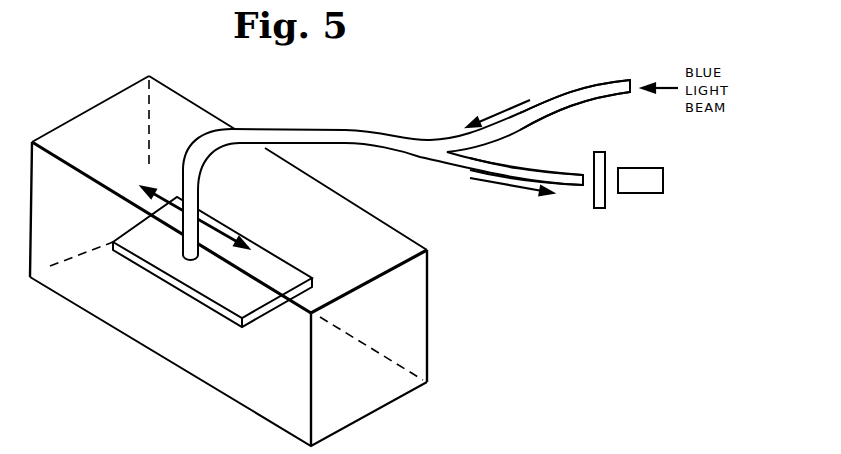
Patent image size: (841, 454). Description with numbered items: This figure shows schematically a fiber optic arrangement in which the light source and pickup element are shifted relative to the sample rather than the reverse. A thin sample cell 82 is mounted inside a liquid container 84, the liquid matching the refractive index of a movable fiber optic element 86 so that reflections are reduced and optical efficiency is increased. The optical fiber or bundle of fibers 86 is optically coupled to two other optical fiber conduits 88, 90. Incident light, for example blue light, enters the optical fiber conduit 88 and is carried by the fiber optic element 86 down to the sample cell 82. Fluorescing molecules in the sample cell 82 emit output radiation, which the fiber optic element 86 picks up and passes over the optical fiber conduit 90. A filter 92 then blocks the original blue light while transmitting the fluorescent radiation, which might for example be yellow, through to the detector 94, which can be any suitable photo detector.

The thin sample cell 82 is at (213, 311).
The liquid container 84 is at (428, 313).
The movable fiber optic element 86 is at (188, 160).
The optical fiber conduit 88 is at (575, 88).
The optical fiber conduit 90 is at (540, 170).
The filter 92 is at (600, 208).
The detector 94 is at (663, 182).